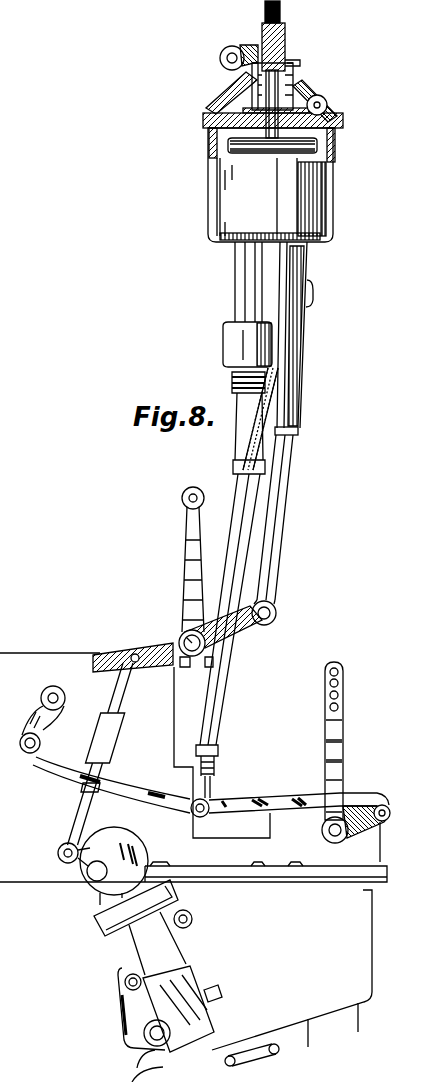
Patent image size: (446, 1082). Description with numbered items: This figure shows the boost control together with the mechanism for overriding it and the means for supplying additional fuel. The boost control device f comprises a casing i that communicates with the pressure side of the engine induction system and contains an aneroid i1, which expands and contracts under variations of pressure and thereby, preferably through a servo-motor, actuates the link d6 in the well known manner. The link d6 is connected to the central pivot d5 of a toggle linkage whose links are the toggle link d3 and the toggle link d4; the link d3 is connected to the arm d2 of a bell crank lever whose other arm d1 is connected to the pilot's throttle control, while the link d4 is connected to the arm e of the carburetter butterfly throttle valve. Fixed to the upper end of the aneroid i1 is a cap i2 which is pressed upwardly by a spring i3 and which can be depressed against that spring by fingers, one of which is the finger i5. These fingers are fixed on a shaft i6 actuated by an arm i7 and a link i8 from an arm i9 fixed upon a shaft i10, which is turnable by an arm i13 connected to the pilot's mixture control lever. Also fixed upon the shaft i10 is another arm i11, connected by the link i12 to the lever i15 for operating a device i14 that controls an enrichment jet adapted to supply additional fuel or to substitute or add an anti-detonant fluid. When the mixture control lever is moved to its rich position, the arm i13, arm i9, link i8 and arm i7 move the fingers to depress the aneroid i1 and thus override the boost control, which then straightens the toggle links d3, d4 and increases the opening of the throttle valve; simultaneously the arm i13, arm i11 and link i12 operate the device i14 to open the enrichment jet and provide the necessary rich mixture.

The casing i is at (228, 188).
The aneroid i1 is at (334, 146).
The cap i2 is at (293, 73).
The spring i3 is at (236, 80).
The finger i5 is at (248, 43).
The shaft i6 is at (220, 56).
The arm i7 is at (322, 96).
The link i8 is at (333, 212).
The arm i9 is at (260, 626).
The shaft i10 is at (180, 637).
The arm i11 is at (125, 655).
The link i12 is at (124, 710).
The arm i13 is at (190, 545).
The device i14 is at (138, 950).
The lever i15 is at (72, 862).
The boost control device f is at (232, 250).
The arm e is at (44, 730).
The arm of bell crank lever d1 is at (340, 762).
The arm of bell crank lever d2 is at (382, 848).
The toggle link d3 is at (278, 798).
The toggle link d4 is at (129, 788).
The central pivot d5 is at (191, 813).
The link d6 is at (224, 714).